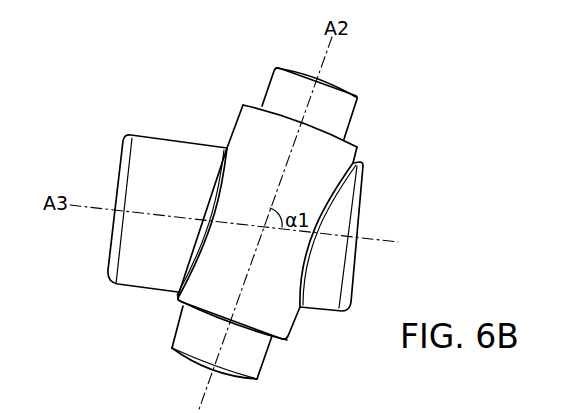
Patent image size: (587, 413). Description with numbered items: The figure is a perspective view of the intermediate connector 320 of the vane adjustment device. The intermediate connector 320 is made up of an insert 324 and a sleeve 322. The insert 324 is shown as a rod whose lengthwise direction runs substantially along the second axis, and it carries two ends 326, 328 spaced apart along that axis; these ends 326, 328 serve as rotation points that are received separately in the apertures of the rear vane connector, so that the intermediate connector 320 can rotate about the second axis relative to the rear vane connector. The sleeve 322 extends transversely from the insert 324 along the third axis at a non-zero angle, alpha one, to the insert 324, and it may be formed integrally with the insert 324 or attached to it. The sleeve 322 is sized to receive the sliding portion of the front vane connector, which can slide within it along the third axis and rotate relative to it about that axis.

The intermediate connector 320 is at (102, 106).
The sleeve 322 is at (327, 248).
The insert 324 is at (308, 158).
The end of the insert 326 is at (336, 98).
The end of the insert 328 is at (250, 360).